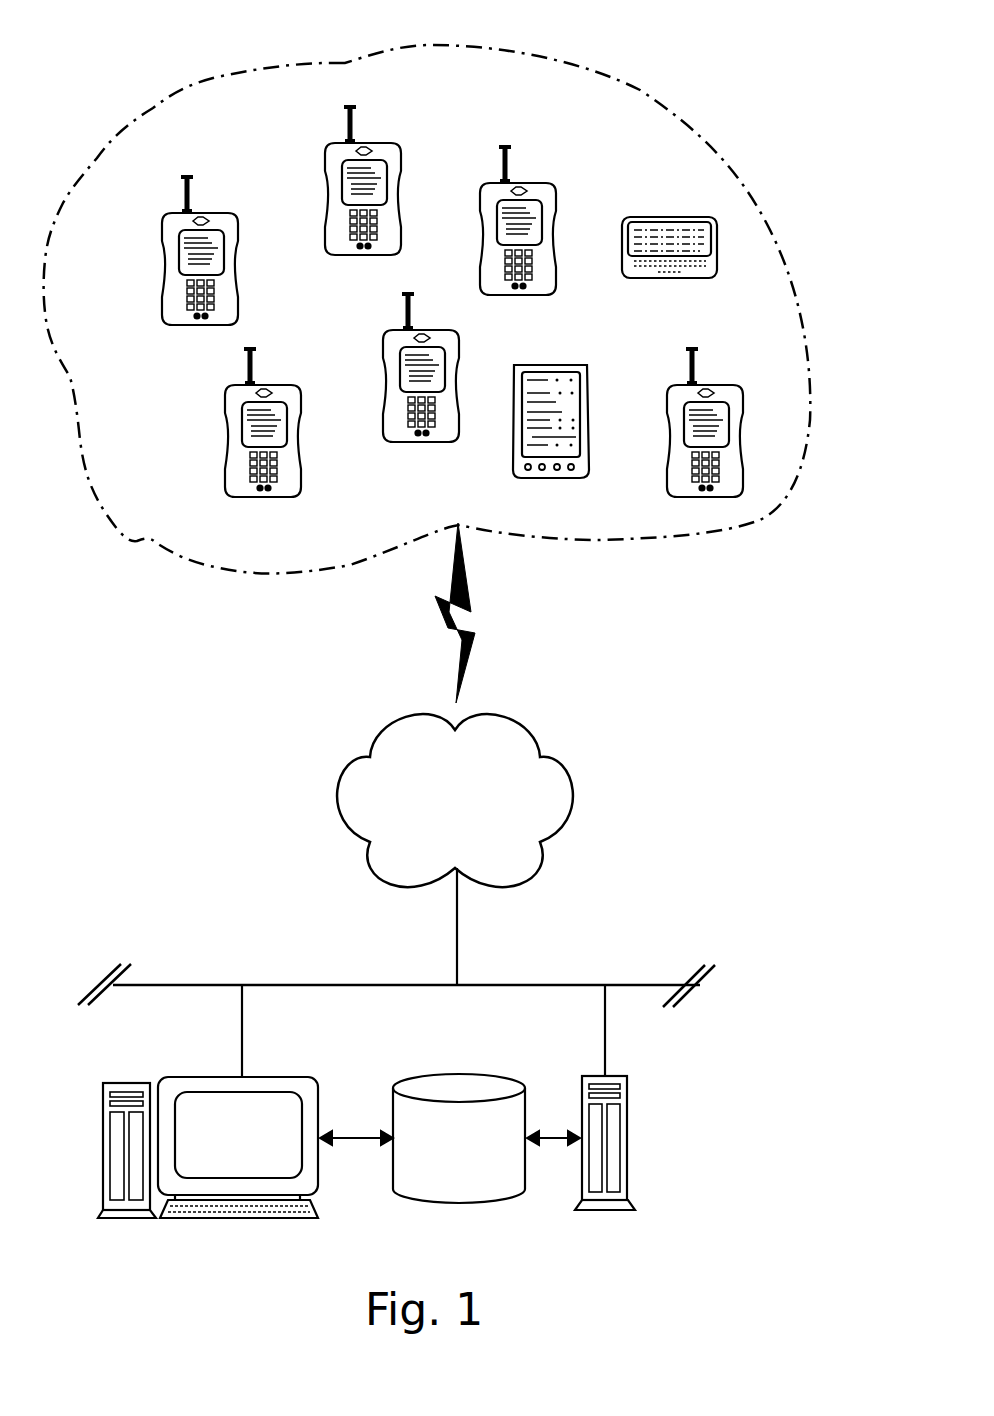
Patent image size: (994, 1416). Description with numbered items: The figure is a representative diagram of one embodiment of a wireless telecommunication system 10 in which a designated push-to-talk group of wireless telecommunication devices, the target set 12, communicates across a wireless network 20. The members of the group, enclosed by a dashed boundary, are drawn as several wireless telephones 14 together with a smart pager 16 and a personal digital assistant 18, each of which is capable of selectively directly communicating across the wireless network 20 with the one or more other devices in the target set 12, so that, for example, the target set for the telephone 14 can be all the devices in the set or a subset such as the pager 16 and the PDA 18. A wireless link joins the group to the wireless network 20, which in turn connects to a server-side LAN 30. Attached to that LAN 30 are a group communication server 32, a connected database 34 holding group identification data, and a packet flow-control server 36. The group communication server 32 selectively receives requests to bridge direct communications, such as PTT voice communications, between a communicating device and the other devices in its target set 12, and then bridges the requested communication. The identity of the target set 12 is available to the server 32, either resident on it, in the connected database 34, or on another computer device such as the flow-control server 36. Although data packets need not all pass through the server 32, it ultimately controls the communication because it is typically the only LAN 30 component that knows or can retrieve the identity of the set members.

The wireless telecommunication system 10 is at (735, 82).
The target set 12 is at (119, 563).
The wireless telephone 14 is at (388, 146).
The smart pager 16 is at (672, 279).
The personal digital assistant 18 is at (513, 444).
The wireless network 20 is at (578, 798).
The server-side LAN 30 is at (204, 985).
The group communication server 32 is at (208, 1077).
The database 34 is at (393, 1167).
The packet flow-control server 36 is at (628, 1185).